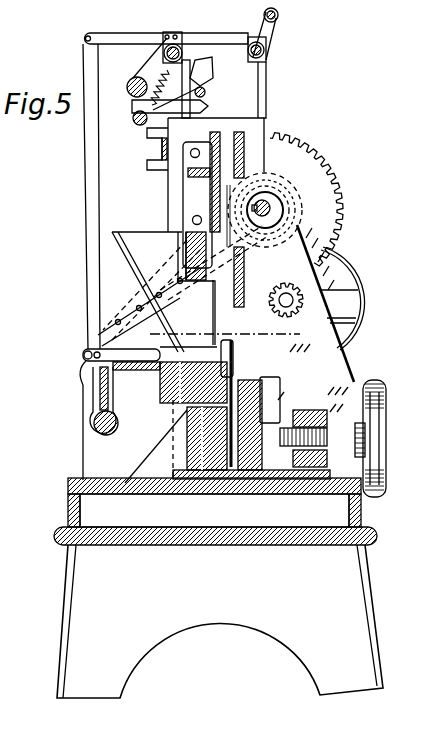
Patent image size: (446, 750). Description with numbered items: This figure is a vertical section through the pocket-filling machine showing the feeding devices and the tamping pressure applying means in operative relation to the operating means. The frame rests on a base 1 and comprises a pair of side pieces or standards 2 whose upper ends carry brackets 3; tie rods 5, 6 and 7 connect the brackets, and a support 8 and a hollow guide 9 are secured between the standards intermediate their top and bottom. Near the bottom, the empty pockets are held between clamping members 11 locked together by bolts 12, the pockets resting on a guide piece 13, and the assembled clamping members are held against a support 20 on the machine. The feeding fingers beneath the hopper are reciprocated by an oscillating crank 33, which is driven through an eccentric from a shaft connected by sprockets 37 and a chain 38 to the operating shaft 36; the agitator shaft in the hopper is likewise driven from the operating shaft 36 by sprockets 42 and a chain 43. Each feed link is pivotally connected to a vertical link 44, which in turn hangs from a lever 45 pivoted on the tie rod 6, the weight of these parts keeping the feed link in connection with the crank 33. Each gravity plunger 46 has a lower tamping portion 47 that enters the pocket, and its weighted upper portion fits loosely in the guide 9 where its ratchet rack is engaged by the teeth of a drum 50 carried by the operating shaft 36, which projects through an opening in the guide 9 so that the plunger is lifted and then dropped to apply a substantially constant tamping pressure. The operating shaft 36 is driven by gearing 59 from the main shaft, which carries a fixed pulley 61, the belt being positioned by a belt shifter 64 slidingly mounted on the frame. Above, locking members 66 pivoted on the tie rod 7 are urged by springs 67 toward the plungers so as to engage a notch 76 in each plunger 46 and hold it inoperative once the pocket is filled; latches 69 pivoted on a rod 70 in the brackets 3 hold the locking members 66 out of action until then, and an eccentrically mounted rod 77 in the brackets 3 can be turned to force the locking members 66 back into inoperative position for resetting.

The base 1 is at (213, 604).
The side piece or standard 2 is at (320, 318).
The bracket 3 is at (262, 110).
The tie rod 5 is at (279, 16).
The tie rod 6 is at (267, 50).
The tie rod 7 is at (370, 438).
The support 8 is at (237, 416).
The hollow guide 9 is at (212, 232).
The clamping member 11 is at (215, 507).
The bolt 12 is at (214, 510).
The guide piece 13 is at (223, 334).
The support 20 is at (135, 434).
The oscillating crank 33 is at (114, 398).
The operating shaft 36 is at (286, 196).
The sprocket 37 is at (83, 353).
The chain 38 is at (123, 310).
The sprocket 42 is at (275, 306).
The chain 43 is at (262, 282).
The vertical link 44 is at (87, 211).
The lever 45 is at (129, 33).
The plunger 46 is at (236, 353).
The tamping portion 47 is at (343, 195).
The drum 50 is at (267, 203).
The gearing 59 is at (311, 147).
The fixed pulley 61 is at (345, 270).
The belt shifter 64 is at (160, 176).
The locking member 66 is at (212, 100).
The spring 67 is at (133, 118).
The latch 69 is at (193, 40).
The rod 70 is at (173, 78).
The notch 76 is at (130, 232).
The rod 77 is at (136, 78).